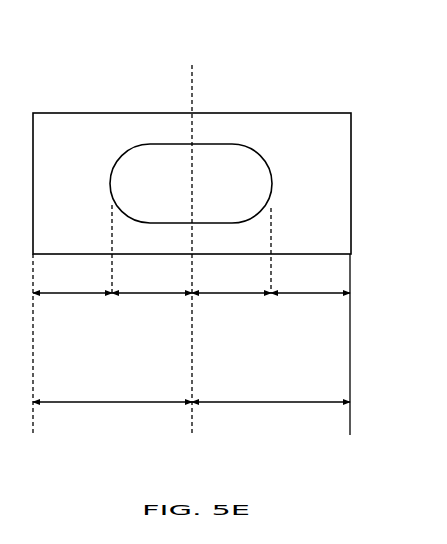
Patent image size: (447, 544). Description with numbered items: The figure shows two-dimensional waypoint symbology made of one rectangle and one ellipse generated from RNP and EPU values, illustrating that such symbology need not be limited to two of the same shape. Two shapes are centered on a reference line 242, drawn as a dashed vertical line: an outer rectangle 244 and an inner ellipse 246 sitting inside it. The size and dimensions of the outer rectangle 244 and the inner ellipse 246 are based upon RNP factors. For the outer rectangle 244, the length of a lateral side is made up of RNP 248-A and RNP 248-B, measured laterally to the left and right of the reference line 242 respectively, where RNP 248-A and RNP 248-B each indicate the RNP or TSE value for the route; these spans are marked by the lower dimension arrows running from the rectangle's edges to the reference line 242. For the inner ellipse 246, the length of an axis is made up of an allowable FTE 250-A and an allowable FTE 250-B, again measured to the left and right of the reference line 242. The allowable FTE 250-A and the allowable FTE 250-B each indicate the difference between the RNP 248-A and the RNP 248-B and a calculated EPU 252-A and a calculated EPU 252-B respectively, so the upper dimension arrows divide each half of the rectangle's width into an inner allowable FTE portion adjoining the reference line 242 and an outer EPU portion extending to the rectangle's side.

The reference line 242 is at (192, 82).
The outer rectangle 244 is at (70, 113).
The inner ellipse 246 is at (127, 152).
The RNP 248-A is at (107, 407).
The RNP 248-B is at (270, 407).
The allowable FTE 250-A is at (149, 300).
The allowable FTE 250-B is at (233, 300).
The calculated EPU 252-A is at (73, 300).
The calculated EPU 252-B is at (310, 300).